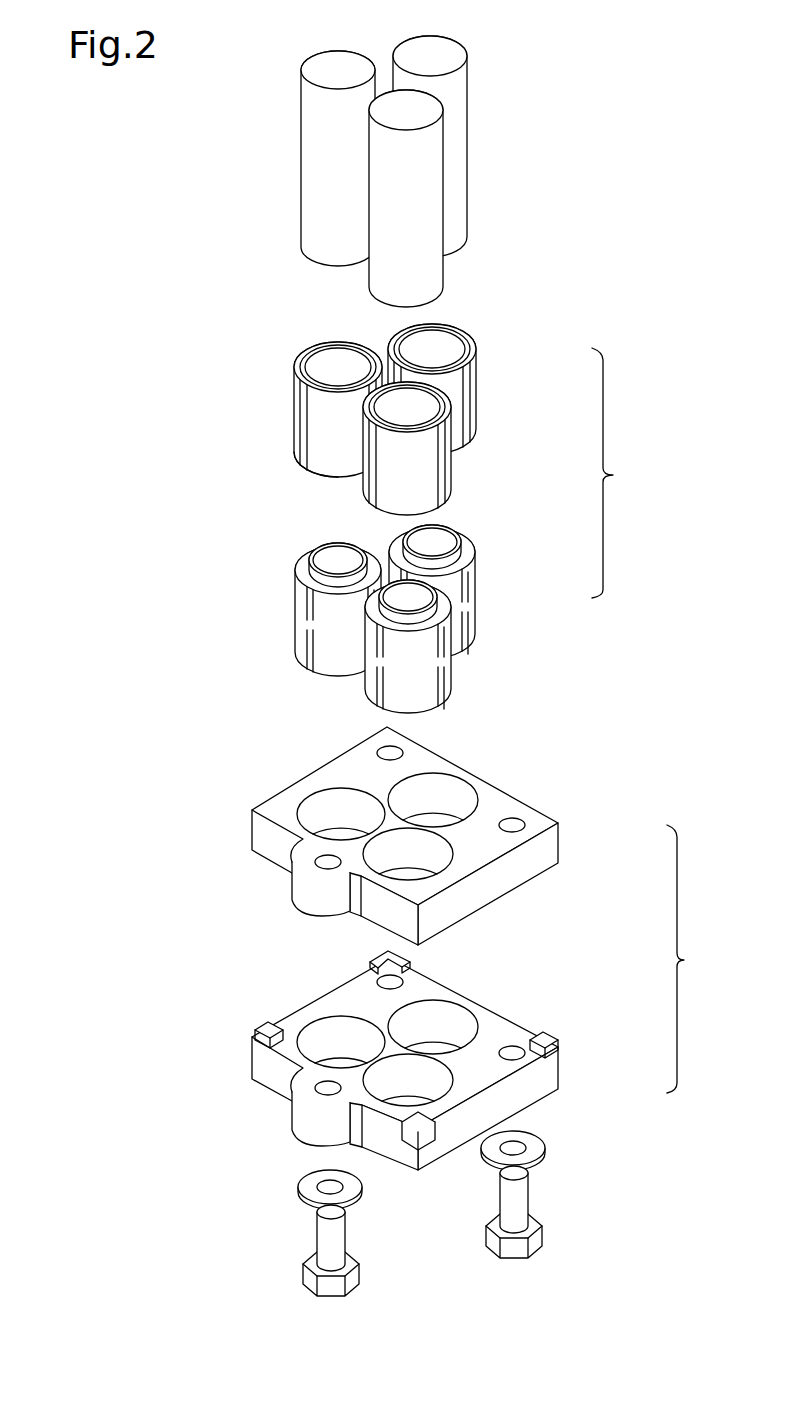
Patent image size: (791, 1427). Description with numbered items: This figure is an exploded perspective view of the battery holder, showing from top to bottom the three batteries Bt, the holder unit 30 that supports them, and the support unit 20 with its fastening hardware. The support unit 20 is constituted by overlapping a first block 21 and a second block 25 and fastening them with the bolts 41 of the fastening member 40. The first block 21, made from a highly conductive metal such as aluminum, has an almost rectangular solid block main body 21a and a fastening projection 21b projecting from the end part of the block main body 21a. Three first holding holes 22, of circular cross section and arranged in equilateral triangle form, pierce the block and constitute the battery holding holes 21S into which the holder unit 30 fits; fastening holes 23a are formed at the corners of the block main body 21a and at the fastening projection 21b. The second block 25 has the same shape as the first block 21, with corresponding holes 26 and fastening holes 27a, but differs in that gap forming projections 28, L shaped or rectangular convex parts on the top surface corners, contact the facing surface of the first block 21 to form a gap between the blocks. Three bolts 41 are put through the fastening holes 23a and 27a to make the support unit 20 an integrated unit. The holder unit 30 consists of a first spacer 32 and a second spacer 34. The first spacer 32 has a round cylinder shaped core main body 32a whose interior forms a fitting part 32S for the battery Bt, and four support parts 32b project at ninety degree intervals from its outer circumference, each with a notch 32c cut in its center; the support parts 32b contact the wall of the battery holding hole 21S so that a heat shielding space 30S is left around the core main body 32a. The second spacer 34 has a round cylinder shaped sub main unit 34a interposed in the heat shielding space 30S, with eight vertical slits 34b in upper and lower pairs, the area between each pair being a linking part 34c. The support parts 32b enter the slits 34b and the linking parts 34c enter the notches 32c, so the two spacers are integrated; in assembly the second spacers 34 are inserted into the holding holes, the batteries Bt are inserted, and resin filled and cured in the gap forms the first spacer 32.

The battery Bt is at (467, 123).
The holder unit 30 is at (418, 497).
The first spacer 32 is at (388, 398).
The fitting part 32S is at (333, 345).
The core main body 32a is at (302, 358).
The support part 32b is at (302, 412).
The notch 32c is at (302, 427).
The heat shielding space 30S is at (295, 443).
The second spacer 34 is at (404, 619).
The sub main unit 34a is at (293, 575).
The slit 34b is at (300, 602).
The linking part 34c is at (302, 622).
The support unit 20 is at (424, 970).
The first block 21 is at (399, 826).
The battery holding hole 21S is at (405, 816).
The block main body 21a is at (487, 782).
The fastening projection 21b is at (293, 868).
The first holding hole 22 is at (320, 808).
The fastening hole 23a is at (393, 750).
The second block 25 is at (396, 1089).
The insertion hole of lower plate 26 is at (320, 1040).
The fastening hole 27a is at (367, 980).
The gap forming projection 28 is at (413, 955).
The fastening member 40 is at (489, 1213).
The bolt 41 is at (542, 1230).